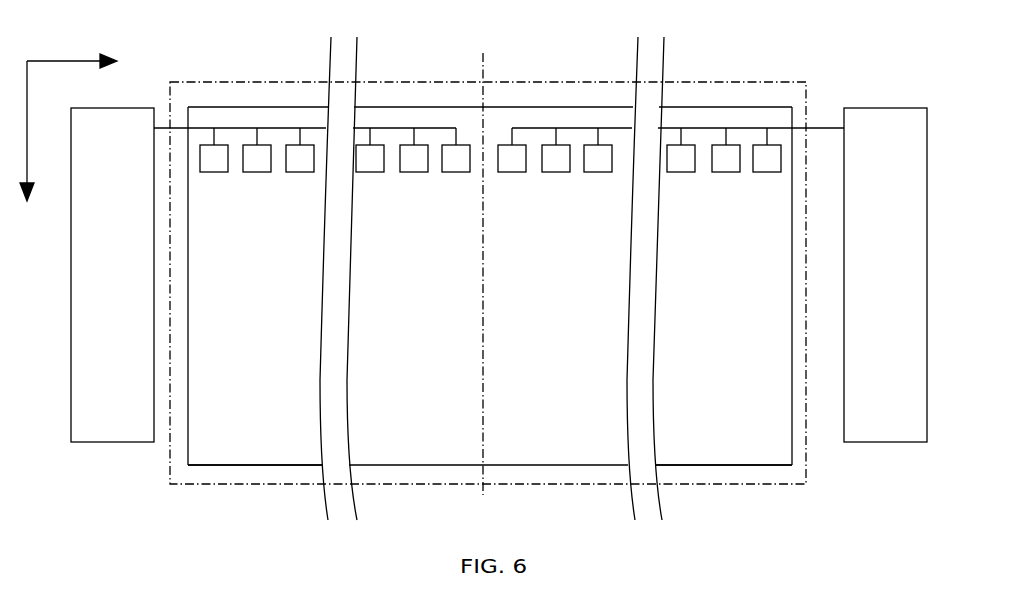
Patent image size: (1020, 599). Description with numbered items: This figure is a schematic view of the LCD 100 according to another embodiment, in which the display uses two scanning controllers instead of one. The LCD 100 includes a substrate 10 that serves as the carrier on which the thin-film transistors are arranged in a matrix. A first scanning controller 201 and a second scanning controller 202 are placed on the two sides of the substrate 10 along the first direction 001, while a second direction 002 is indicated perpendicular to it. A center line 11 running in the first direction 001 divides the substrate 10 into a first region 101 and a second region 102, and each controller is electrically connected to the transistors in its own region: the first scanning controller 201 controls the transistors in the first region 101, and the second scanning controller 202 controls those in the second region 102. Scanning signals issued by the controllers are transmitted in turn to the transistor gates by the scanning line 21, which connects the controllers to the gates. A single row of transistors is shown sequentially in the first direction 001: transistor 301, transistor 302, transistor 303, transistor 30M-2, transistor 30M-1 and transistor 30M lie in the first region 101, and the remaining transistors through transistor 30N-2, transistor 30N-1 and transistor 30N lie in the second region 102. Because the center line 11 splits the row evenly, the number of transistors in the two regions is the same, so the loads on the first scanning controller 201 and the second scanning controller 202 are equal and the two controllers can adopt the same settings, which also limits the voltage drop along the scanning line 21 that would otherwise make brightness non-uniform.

The first direction 001 is at (72, 48).
The second direction 002 is at (30, 148).
The LCD 100 is at (838, 83).
The substrate 10 is at (529, 436).
The first region 101 is at (240, 477).
The second region 102 is at (718, 470).
The center line 11 is at (483, 415).
The first scanning controller 201 is at (108, 423).
The second scanning controller 202 is at (877, 420).
The scanning line 21 is at (238, 128).
The transistor 301 is at (206, 165).
The transistor 302 is at (262, 165).
The transistor 303 is at (305, 165).
The transistor 30M-2 is at (370, 165).
The transistor 30M-1 is at (413, 157).
The transistor 30M is at (456, 165).
The transistor 30N-2 is at (681, 165).
The transistor 30N-1 is at (728, 157).
The transistor 30N is at (766, 165).